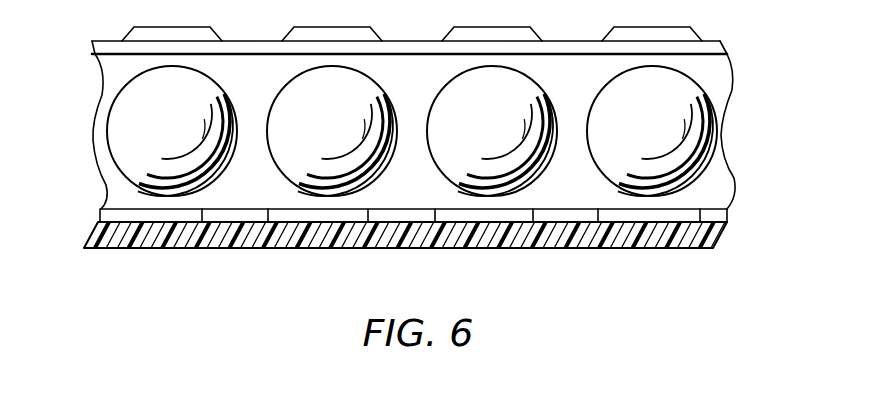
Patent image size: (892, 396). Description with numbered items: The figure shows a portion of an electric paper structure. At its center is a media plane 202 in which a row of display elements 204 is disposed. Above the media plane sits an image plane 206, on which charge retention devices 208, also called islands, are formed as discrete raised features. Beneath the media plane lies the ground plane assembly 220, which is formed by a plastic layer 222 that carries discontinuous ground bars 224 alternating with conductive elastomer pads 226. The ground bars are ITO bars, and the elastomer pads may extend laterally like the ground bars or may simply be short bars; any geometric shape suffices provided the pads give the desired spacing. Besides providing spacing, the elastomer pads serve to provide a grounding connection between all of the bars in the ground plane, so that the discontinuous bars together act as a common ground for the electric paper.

The media plane 202 is at (93, 137).
The display elements 204 is at (412, 131).
The image plane 206 is at (93, 48).
The charge retention devices 208 is at (193, 32).
The ground plane assembly 220 is at (735, 208).
The plastic layer 222 is at (95, 238).
The discontinuous ground bars 224 is at (148, 218).
The conductive elastomer pads 226 is at (232, 218).